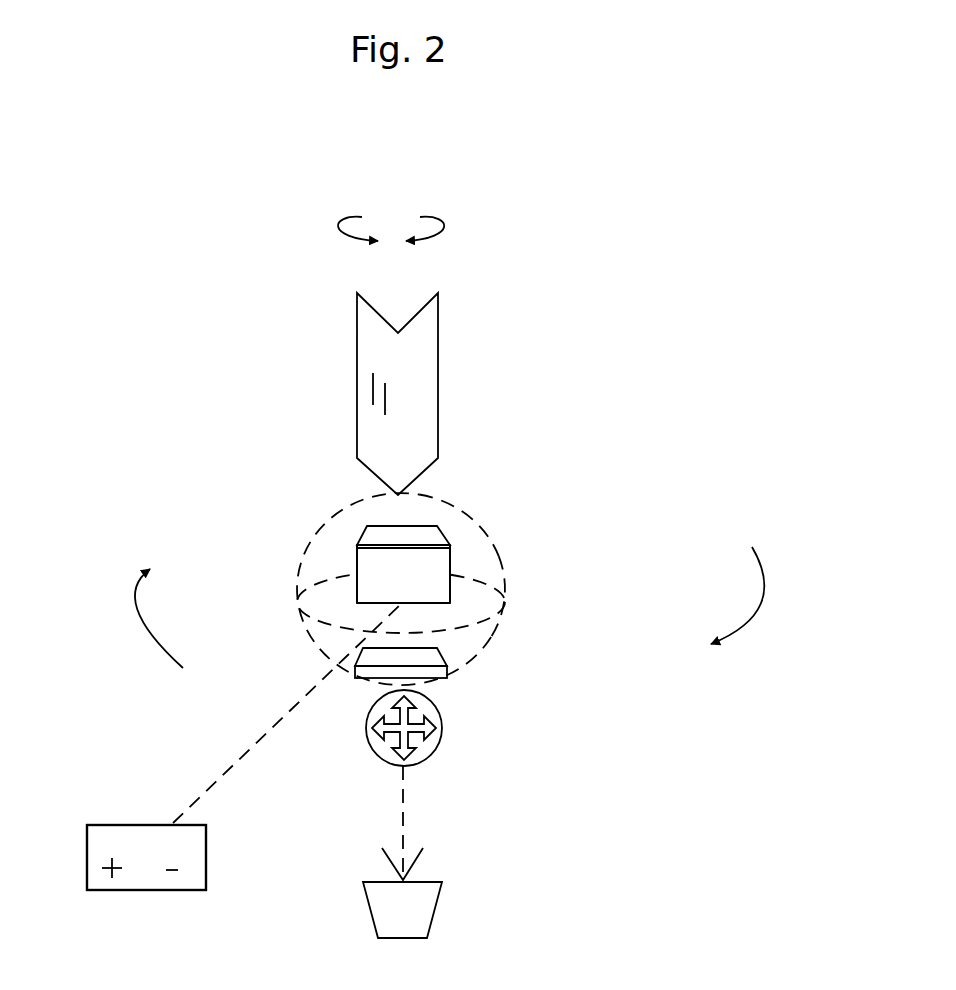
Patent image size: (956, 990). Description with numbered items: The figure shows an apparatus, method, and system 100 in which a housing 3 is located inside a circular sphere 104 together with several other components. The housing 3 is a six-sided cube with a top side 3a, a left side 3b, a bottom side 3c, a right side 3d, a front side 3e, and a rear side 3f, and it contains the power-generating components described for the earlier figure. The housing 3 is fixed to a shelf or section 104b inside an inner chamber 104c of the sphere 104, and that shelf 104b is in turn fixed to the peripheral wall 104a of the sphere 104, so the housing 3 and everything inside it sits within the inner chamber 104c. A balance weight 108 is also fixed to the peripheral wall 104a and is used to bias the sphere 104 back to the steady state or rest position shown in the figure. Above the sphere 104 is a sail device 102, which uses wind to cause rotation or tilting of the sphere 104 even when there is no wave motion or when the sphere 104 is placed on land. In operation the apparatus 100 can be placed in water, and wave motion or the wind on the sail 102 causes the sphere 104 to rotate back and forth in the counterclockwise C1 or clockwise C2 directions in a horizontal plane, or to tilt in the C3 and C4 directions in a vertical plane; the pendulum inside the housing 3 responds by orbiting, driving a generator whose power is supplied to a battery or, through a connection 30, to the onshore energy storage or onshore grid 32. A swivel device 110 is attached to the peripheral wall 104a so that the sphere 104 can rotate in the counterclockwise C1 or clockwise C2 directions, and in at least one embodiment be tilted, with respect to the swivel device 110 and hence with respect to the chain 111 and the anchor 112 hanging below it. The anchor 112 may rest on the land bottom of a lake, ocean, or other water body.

The apparatus, method, and system 100 is at (552, 356).
The sail device 102 is at (423, 398).
The circular sphere 104 is at (452, 502).
The peripheral wall 104a is at (478, 522).
The shelf or section 104b is at (477, 603).
The inner chamber 104c is at (483, 555).
The housing 3 is at (460, 549).
The top side 3a is at (388, 574).
The left side 3b is at (357, 573).
The bottom side 3c is at (450, 579).
The right side 3d is at (362, 605).
The front side 3e is at (357, 576).
The rear side 3f is at (383, 540).
The balance weight 108 is at (447, 663).
The swivel device 110 is at (438, 742).
The chain 111 is at (412, 823).
The anchor 112 is at (410, 913).
The electrical connection line 30 is at (242, 763).
The onshore energy storage or onshore grid 32 is at (177, 843).
The counterclockwise direction C1 is at (340, 225).
The clockwise direction C2 is at (445, 228).
The tilting direction C3 is at (144, 618).
The tilting direction C4 is at (751, 595).